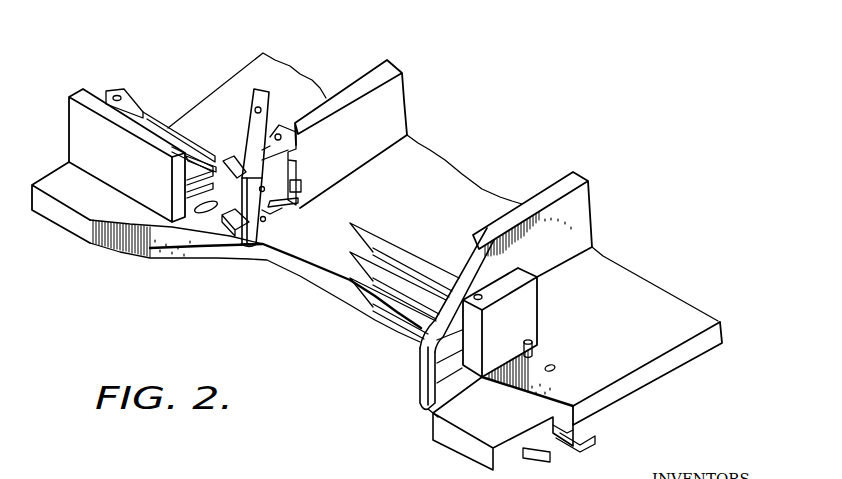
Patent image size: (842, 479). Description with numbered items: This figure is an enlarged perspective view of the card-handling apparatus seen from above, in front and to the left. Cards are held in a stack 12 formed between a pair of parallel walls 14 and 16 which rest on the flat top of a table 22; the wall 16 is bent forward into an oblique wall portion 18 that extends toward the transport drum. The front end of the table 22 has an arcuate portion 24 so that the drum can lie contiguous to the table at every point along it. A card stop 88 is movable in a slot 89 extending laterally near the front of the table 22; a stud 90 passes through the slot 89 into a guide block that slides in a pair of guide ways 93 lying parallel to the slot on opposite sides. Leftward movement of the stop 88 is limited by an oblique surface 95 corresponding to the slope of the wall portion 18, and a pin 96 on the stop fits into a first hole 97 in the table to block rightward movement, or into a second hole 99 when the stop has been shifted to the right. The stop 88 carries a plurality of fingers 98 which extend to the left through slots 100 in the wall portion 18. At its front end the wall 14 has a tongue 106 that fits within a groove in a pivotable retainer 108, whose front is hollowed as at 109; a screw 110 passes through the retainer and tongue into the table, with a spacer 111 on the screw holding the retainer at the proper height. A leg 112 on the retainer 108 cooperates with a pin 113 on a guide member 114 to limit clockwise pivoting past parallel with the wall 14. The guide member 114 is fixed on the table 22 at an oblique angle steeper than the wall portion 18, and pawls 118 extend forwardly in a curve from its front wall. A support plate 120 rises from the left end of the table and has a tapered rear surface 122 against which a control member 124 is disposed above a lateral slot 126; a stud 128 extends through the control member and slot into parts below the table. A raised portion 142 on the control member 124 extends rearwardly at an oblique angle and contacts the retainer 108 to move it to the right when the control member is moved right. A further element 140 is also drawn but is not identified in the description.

The stack 12 is at (463, 180).
The wall 14 is at (392, 67).
The wall 16 is at (580, 180).
The wall portion 18 is at (457, 268).
The table 22 is at (653, 295).
The arcuate portion 24 is at (328, 292).
The card stop 88 is at (537, 308).
The slot 89 is at (549, 398).
The stud 90 is at (481, 294).
The guide ways 93 is at (546, 455).
The surface 95 is at (476, 254).
The pin 96 is at (535, 346).
The first hole 97 is at (522, 347).
The fingers 98 is at (378, 275).
The second hole 99 is at (556, 367).
The slots 100 is at (446, 383).
The tongue 106 is at (290, 168).
The retainer 108 is at (279, 207).
The hollowed front portion 109 is at (230, 234).
The screw 110 is at (287, 130).
The spacer 111 is at (282, 205).
The leg 112 is at (301, 185).
The pin 113 is at (256, 108).
The guide member 114 is at (262, 88).
The pawls 118 is at (262, 245).
The support plate 120 is at (70, 149).
The rear surface 122 is at (173, 147).
The control member 124 is at (157, 122).
The slot 126 is at (198, 214).
The stud 128 is at (115, 95).
The strip 140 is at (193, 153).
The raised portion 142 is at (143, 112).